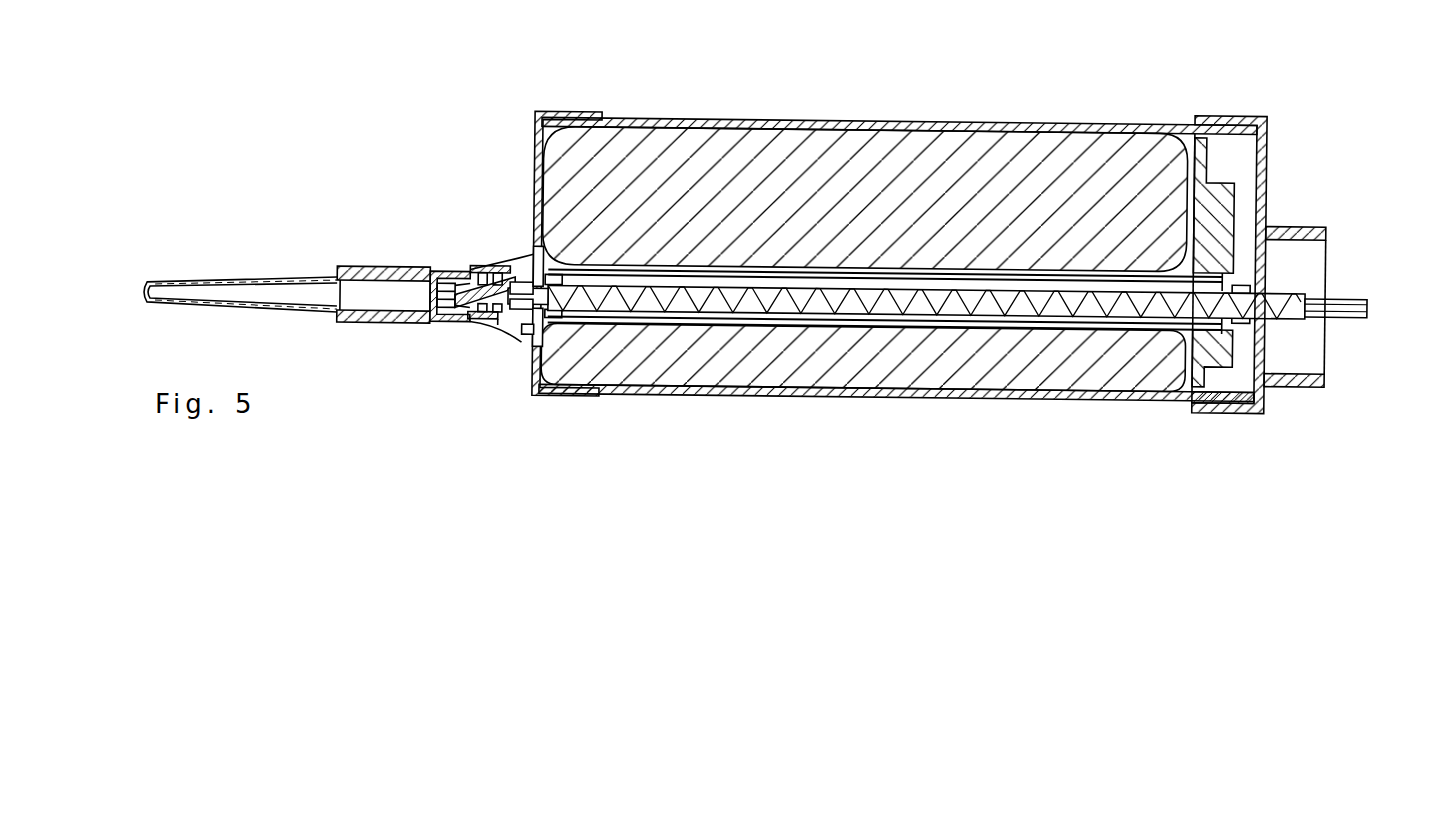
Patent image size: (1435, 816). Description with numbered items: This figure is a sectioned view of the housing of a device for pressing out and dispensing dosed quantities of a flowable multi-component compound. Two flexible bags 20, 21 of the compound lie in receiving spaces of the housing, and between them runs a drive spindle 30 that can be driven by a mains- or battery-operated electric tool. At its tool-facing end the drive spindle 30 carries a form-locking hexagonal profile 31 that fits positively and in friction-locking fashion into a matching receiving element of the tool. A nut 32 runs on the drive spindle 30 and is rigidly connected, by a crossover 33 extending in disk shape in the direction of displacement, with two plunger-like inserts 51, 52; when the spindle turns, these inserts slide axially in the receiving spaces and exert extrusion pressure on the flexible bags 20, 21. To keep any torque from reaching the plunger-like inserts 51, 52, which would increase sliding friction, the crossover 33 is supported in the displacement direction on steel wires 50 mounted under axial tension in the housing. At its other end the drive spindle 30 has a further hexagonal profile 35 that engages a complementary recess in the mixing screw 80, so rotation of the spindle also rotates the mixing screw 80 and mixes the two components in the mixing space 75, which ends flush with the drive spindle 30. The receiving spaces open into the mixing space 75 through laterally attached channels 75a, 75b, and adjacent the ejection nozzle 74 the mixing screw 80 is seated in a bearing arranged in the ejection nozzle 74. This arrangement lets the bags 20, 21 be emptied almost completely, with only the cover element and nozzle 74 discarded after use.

The flexible bag 20 is at (593, 183).
The flexible bag 21 is at (613, 370).
The drive spindle 30 is at (830, 300).
The hexagonal profile 31 is at (1368, 311).
The nut 32 is at (1203, 317).
The crossover 33 is at (1230, 216).
The hexagonal profile 35 is at (537, 335).
The steel wires 50 is at (941, 330).
The plunger-like insert 51 is at (1199, 163).
The plunger-like insert 52 is at (1242, 402).
The ejection nozzle 74 is at (313, 273).
The mixing space 75 is at (527, 262).
The mixing channel 75a is at (525, 252).
The mixing channel 75b is at (523, 330).
The mixing screw 80 is at (462, 270).